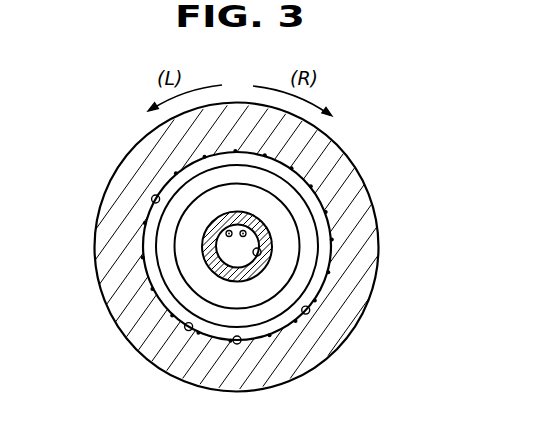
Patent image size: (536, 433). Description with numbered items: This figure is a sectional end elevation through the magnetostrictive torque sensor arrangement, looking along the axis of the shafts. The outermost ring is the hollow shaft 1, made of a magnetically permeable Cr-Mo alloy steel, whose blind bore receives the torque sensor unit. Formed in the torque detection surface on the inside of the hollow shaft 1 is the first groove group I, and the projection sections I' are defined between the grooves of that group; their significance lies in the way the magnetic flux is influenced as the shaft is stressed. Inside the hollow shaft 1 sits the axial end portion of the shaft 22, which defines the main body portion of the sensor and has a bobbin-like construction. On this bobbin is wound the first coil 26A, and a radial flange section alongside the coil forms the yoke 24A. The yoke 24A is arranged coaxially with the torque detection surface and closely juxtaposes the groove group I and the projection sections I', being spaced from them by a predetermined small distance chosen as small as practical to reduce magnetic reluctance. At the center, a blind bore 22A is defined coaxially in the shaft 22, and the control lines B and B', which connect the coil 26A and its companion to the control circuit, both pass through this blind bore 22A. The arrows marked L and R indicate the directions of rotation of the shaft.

The hollow shaft 1 is at (128, 165).
The shaft 22 is at (202, 252).
The blind bore 22A is at (260, 253).
The yoke 24A is at (187, 304).
The first coil 26A is at (202, 280).
The first groove group I is at (160, 310).
The projection sections I' is at (265, 358).
The control line B is at (218, 215).
The control line B' is at (250, 214).